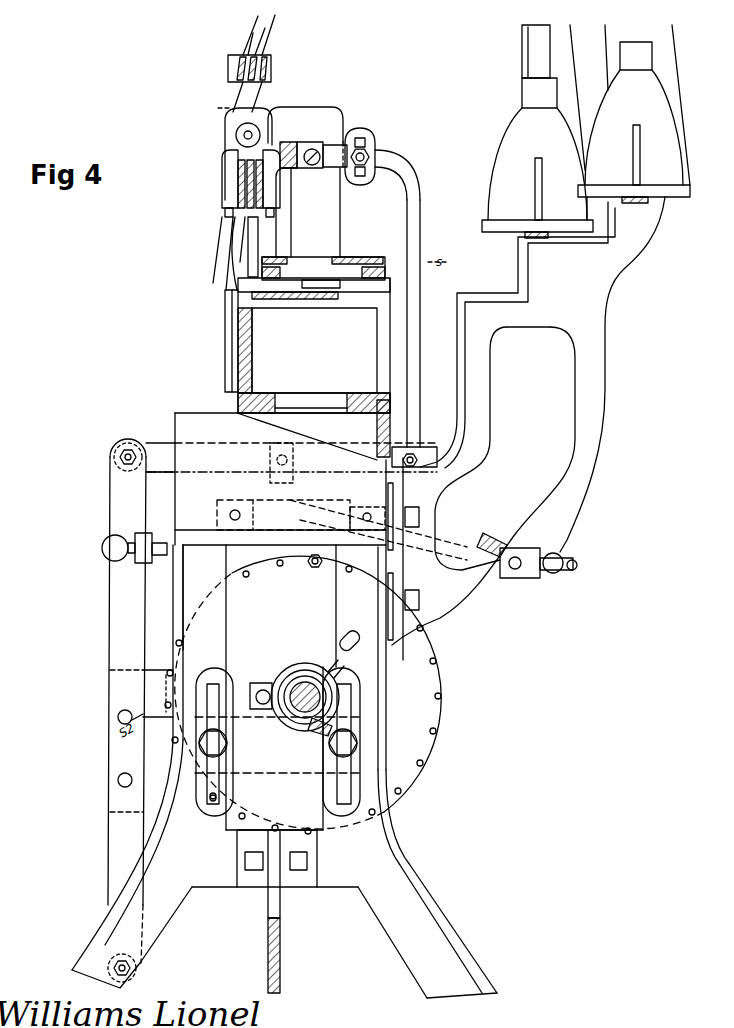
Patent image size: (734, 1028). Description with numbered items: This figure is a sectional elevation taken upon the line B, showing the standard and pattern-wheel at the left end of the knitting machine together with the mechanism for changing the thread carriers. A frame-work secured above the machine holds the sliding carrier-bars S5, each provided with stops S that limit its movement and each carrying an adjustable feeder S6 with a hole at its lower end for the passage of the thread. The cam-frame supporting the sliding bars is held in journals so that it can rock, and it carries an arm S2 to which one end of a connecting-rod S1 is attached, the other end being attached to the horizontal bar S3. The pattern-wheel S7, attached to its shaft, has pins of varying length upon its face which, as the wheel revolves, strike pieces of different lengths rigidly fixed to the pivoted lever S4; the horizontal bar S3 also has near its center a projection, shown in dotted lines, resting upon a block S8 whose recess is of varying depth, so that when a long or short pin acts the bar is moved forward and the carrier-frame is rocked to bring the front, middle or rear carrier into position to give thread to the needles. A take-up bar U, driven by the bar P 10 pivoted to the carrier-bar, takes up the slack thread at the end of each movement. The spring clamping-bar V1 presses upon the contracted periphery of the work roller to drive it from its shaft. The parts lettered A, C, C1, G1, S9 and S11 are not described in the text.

The bar 10 is at (262, 41).
The take-up bar U is at (244, 64).
The bar P is at (263, 63).
The connecting-rod S1 is at (258, 69).
The arm S2 is at (391, 296).
The stops S is at (308, 212).
The carrier-bars S5 is at (246, 220).
The adjustable feeder S6 is at (200, 262).
The side plate C is at (232, 341).
The box B is at (314, 345).
The cover bar C1 is at (323, 274).
The horizontal bar S3 is at (142, 455).
The pivoted lever S4 is at (134, 710).
The pattern-wheel S7 is at (303, 689).
The block S8 is at (283, 515).
The bracket S9 is at (156, 693).
The plate A is at (204, 687).
The spring clamping-bar V1 is at (306, 682).
The gauge G1 is at (305, 697).
The block S11 is at (410, 600).